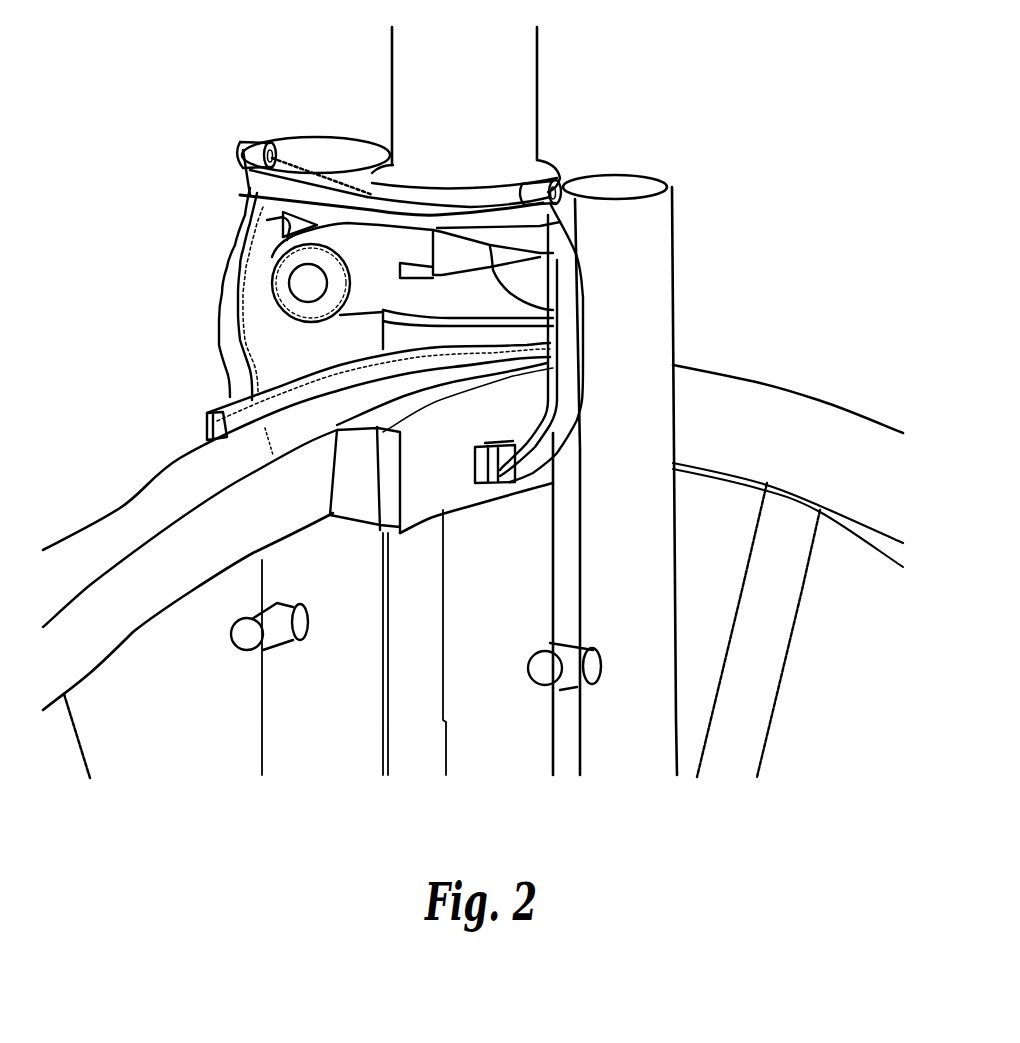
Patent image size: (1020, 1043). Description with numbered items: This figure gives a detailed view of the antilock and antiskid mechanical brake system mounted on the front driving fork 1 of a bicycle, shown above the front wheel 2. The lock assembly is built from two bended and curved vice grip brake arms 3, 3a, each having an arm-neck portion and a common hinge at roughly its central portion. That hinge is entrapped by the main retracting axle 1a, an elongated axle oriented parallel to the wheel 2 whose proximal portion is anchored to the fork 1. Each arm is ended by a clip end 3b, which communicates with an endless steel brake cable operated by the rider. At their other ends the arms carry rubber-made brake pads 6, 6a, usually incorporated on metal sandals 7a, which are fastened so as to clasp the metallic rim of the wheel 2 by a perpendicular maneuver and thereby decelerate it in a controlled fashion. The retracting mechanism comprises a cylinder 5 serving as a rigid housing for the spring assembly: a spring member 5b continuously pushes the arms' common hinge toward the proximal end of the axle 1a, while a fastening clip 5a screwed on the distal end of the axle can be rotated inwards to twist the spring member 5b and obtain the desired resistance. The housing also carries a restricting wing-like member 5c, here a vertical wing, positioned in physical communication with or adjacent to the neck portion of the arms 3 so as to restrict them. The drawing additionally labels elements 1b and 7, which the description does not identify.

The front driving fork 1 is at (503, 105).
The main retracting axle 1a is at (307, 290).
The pins 1b is at (233, 630).
The front wheel 2 is at (192, 497).
The vice grip brake arm 3 is at (240, 373).
The vice grip brake arm 3a is at (543, 433).
The clip end 3b is at (243, 158).
The cylinder 5 is at (380, 283).
The fastening clip 5a is at (303, 252).
The spring member 5b is at (383, 205).
The restricting wing-like member 5c is at (452, 260).
The brake pad 6 is at (230, 407).
The brake pad 6a is at (355, 497).
The guide 7 is at (207, 420).
The metal sandal 7a is at (437, 492).